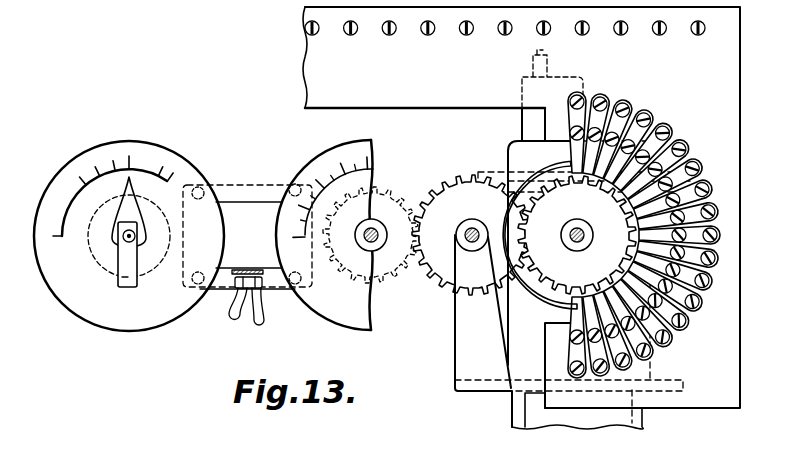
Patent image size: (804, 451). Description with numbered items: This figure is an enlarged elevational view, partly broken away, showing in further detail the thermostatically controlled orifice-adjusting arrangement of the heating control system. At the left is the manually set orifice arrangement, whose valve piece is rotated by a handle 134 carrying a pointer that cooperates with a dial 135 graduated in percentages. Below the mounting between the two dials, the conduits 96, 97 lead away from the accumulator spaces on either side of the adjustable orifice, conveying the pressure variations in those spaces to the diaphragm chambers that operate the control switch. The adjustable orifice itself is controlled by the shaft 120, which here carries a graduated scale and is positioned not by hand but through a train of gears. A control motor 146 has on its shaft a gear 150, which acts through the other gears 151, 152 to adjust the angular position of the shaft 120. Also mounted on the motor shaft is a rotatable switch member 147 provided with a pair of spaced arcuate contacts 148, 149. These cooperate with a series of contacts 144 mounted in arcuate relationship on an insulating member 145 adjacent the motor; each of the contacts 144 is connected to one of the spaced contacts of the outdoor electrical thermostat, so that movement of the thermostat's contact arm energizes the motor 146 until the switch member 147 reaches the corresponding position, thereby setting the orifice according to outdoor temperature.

The conduit 96 is at (236, 318).
The conduit 97 is at (265, 318).
The shaft 120 is at (377, 240).
The handle 134 is at (128, 283).
The dial 135 is at (63, 283).
The series of contacts 144 is at (640, 110).
The insulating member 145 is at (722, 132).
The control motor 146 is at (512, 148).
The rotatable switch member 147 is at (533, 280).
The arcuate contact 148 is at (543, 295).
The arcuate contact 149 is at (670, 296).
The gear 150 is at (577, 235).
The gear 151 is at (452, 183).
The gear 152 is at (381, 198).